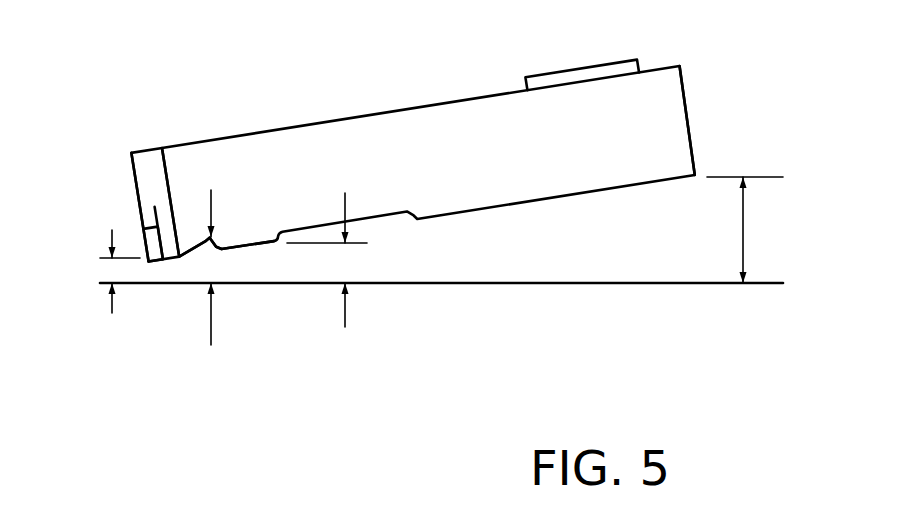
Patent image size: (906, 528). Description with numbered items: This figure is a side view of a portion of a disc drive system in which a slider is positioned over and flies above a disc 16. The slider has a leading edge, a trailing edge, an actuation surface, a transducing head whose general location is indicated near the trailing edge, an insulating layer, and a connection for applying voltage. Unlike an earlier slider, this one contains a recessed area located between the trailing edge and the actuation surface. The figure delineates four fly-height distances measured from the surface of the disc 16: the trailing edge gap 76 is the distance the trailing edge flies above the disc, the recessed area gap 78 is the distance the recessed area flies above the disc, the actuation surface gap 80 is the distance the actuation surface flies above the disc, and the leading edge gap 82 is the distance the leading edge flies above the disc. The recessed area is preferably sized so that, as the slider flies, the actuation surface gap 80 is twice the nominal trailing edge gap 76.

The disc 16 is at (503, 284).
The trailing edge gap 76 is at (111, 291).
The recessed area gap 78 is at (233, 253).
The actuation surface gap 80 is at (327, 260).
The leading edge gap 82 is at (751, 230).